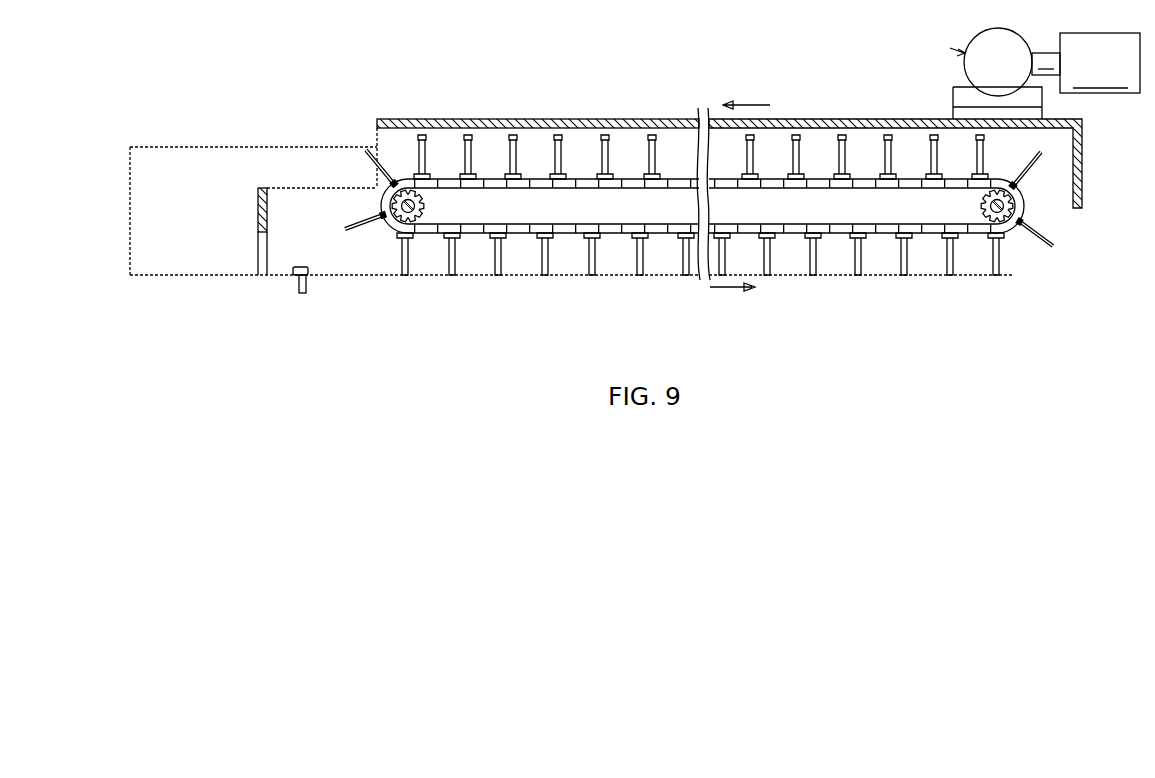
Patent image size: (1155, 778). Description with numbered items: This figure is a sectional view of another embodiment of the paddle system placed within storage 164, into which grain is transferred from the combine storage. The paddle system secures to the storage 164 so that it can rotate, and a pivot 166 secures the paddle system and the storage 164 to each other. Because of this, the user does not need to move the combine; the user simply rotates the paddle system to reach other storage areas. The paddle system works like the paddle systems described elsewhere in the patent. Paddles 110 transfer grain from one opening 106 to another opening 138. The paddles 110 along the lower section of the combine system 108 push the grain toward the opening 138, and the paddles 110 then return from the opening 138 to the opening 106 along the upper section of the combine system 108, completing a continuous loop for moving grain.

The storage 164 is at (157, 145).
The opening 106 is at (300, 193).
The pivot 166 is at (298, 293).
The combine system 108 is at (563, 120).
The paddles 110 is at (422, 137).
The opening 138 is at (1035, 263).